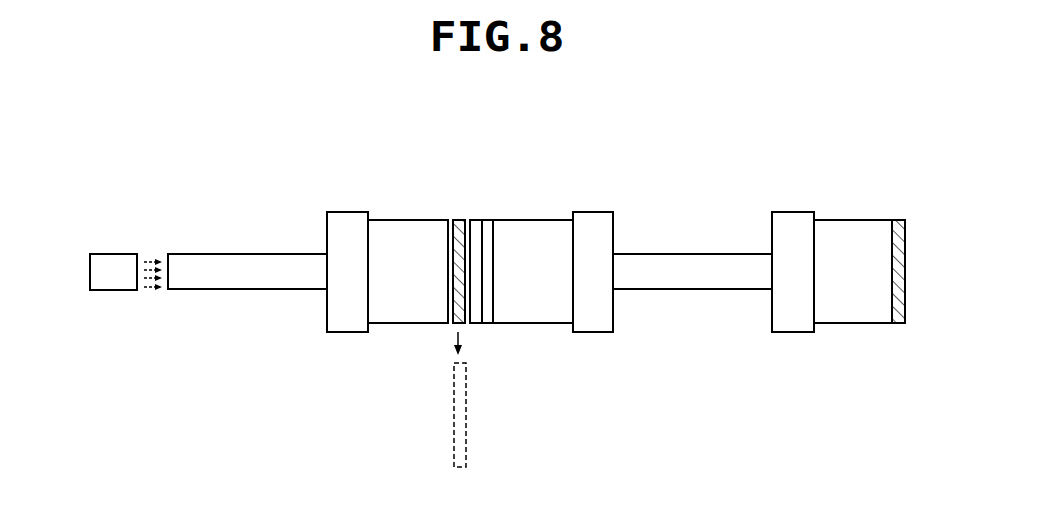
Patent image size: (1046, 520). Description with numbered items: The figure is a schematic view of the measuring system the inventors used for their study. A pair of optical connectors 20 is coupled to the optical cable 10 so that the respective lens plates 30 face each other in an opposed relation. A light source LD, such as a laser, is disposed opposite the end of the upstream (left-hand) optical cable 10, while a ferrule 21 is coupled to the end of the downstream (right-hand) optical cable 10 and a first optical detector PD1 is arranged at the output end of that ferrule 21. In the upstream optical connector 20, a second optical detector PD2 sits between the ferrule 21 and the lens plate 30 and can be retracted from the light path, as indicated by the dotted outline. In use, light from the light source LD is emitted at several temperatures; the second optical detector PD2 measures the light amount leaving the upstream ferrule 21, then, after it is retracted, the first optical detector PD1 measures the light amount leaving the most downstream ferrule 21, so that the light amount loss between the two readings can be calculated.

The light source LD is at (108, 253).
The optical cable 10 is at (252, 253).
The optical connector 20 is at (318, 336).
The ferrule 21 is at (408, 218).
The lens plate 30 is at (472, 218).
The first optical detector PD1 is at (898, 326).
The second optical detector PD2 is at (455, 327).